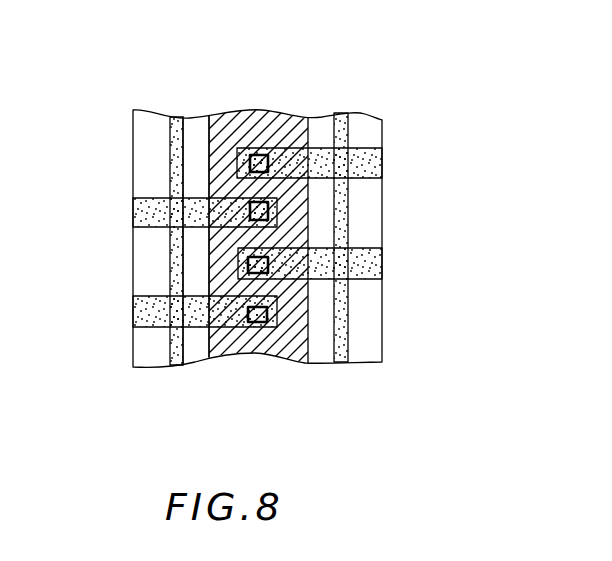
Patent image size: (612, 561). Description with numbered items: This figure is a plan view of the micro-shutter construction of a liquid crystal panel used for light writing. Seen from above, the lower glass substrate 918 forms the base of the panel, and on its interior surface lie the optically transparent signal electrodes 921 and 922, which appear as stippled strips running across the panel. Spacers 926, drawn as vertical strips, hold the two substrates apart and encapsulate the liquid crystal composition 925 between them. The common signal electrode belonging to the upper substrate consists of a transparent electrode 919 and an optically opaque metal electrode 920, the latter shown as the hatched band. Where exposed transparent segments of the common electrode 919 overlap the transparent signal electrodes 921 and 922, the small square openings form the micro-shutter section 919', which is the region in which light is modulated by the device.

The lower glass substrate 918 is at (383, 137).
The transparent electrode 919 is at (298, 155).
The micro-shutter section 919' is at (276, 355).
The metal electrode 920 is at (272, 113).
The signal electrode 921 is at (383, 173).
The signal electrode 922 is at (131, 219).
The liquid crystal composition 925 is at (205, 116).
The spacers 926 is at (190, 99).